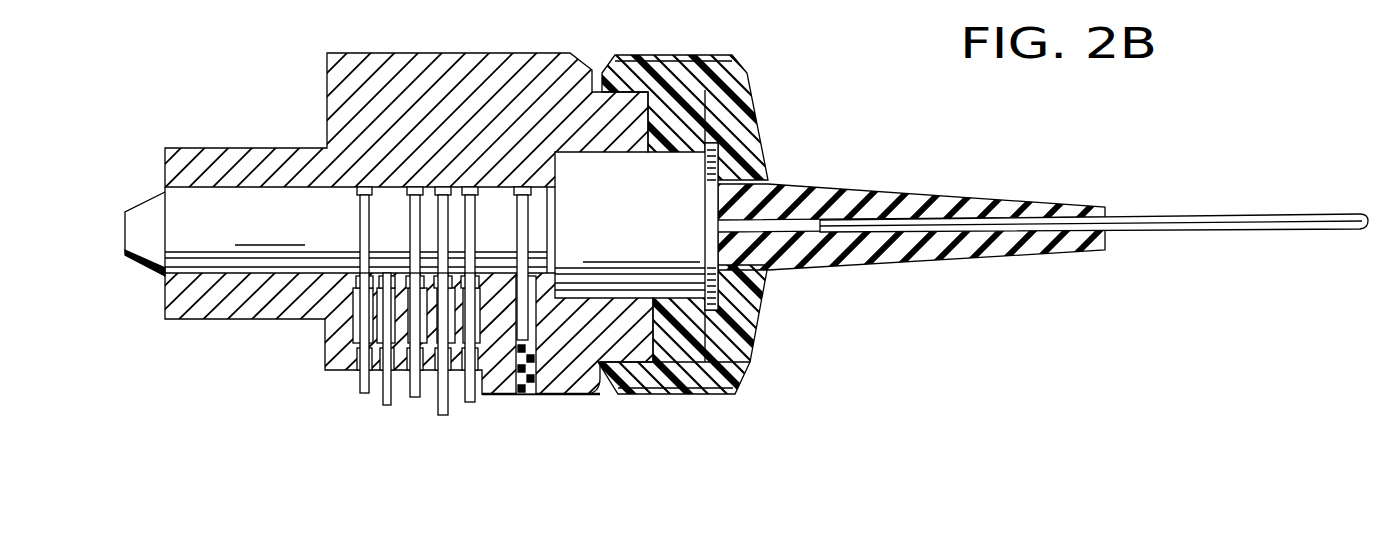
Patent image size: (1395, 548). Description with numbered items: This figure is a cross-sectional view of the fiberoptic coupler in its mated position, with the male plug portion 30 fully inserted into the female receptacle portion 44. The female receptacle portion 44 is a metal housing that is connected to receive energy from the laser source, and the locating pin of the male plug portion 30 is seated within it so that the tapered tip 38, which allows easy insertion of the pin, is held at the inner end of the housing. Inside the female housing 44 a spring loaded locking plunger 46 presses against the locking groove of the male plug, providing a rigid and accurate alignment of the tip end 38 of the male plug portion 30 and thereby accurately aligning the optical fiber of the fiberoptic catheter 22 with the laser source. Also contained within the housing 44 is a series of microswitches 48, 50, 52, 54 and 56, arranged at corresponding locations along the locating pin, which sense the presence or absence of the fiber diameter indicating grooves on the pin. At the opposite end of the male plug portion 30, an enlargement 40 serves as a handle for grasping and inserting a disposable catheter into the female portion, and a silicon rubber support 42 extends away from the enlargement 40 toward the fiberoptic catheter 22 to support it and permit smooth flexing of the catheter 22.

The fiberoptic catheter 22 is at (1218, 215).
The male plug portion 30 is at (697, 274).
The tip 38 is at (142, 210).
The enlargement 40 is at (735, 395).
The silicon rubber support 42 is at (975, 196).
The female receptacle portion 44 is at (506, 52).
The spring loaded locking plunger 46 is at (530, 398).
The microswitch 48 is at (482, 400).
The microswitch 50 is at (446, 345).
The microswitch 52 is at (362, 368).
The microswitch 54 is at (412, 328).
The microswitch 56 is at (395, 316).